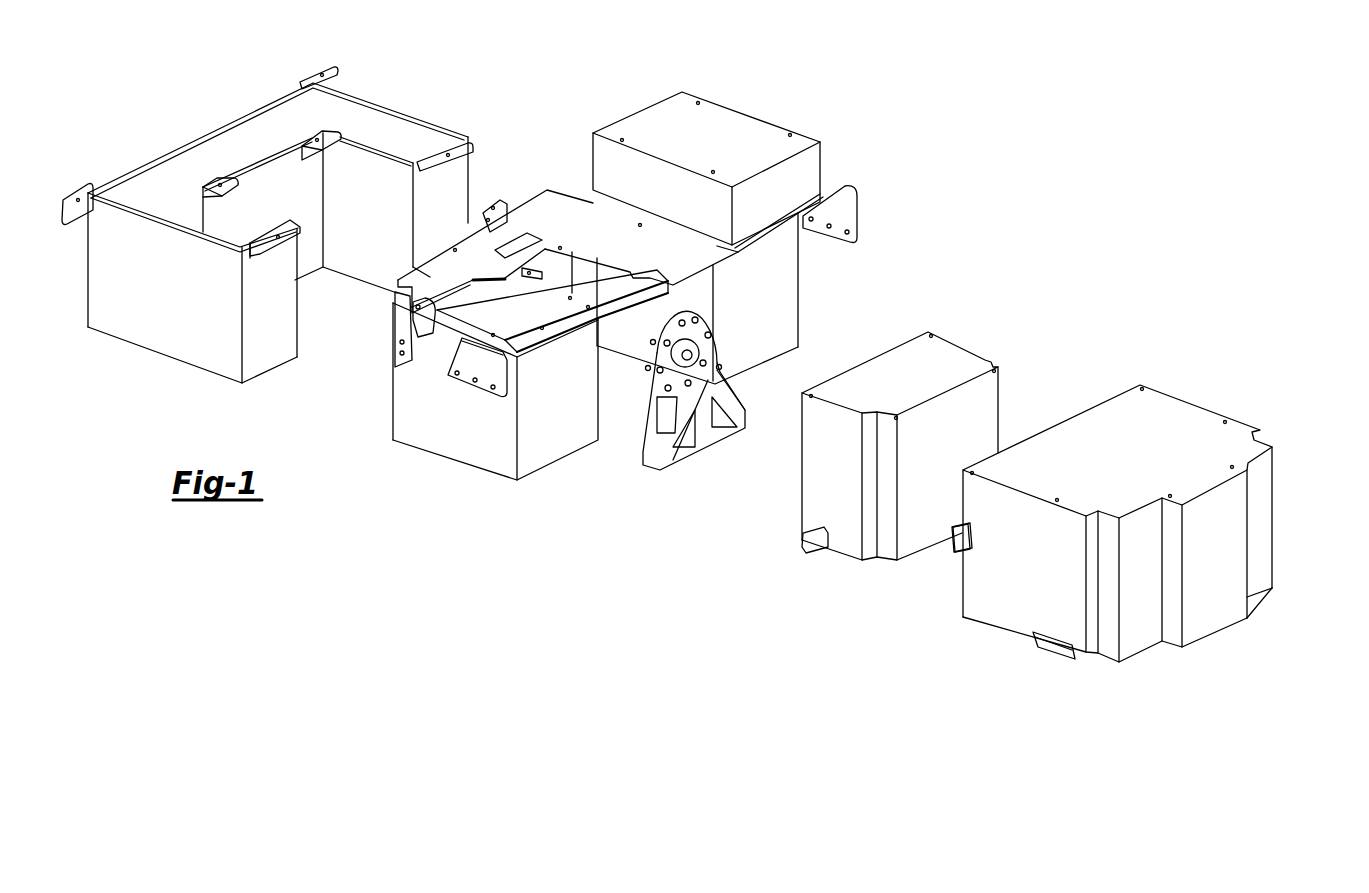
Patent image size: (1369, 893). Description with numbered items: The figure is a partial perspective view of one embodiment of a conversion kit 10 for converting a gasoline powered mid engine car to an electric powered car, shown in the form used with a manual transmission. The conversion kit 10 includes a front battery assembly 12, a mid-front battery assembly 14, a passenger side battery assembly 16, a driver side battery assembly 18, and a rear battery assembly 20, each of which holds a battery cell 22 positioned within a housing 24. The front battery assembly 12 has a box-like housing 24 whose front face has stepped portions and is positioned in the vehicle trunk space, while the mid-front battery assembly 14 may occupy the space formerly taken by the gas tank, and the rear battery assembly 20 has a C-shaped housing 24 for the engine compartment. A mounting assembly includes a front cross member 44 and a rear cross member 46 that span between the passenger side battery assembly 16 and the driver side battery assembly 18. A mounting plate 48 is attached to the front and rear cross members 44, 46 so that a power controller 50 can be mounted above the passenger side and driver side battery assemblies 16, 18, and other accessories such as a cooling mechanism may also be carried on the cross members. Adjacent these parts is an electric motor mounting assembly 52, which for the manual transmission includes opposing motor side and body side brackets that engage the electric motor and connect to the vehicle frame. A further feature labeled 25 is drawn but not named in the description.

The conversion kit 10 is at (943, 223).
The front battery assembly 12 is at (1173, 393).
The mid-front battery assembly 14 is at (960, 338).
The passenger side battery assembly 16 is at (452, 442).
The driver side battery assembly 18 is at (802, 280).
The rear battery assembly 20 is at (393, 108).
The battery cell 22 is at (1095, 430).
The housing 24 is at (1272, 540).
The mounting foot 25 is at (1083, 691).
The front cross member 44 is at (613, 303).
The rear cross member 46 is at (422, 291).
The mounting plate 48 is at (562, 203).
The power controller 50 is at (750, 117).
The electric motor mounting assembly 52 is at (707, 458).